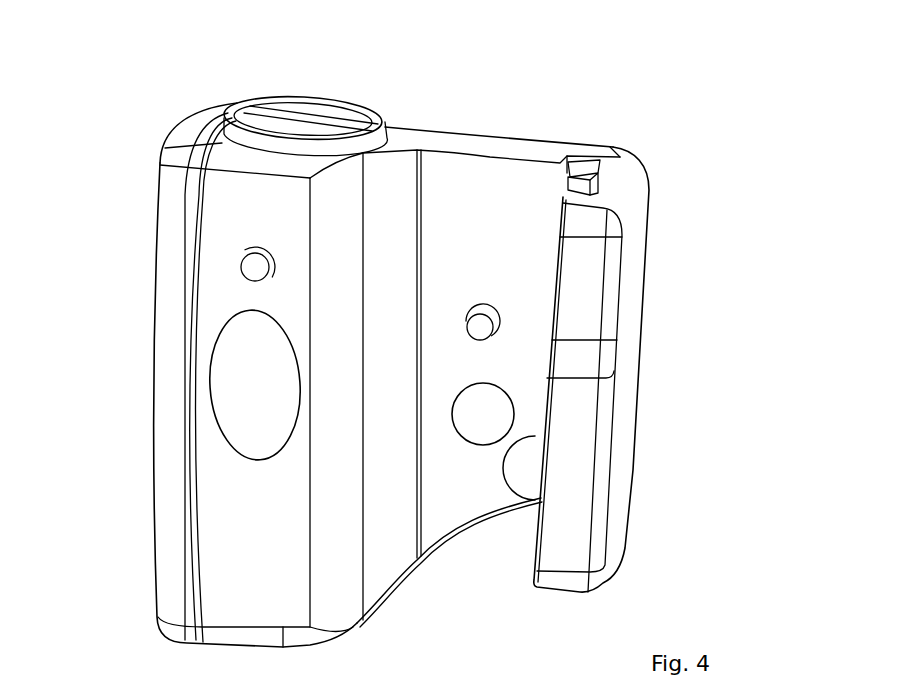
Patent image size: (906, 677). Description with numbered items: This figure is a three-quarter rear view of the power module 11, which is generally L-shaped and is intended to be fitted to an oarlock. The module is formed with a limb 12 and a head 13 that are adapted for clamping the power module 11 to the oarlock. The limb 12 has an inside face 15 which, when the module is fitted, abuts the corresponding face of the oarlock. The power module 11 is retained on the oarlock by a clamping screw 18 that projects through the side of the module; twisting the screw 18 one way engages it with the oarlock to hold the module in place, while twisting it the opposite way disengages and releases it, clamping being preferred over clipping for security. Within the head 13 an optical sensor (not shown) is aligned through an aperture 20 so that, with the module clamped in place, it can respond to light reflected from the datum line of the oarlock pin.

The power module 11 is at (148, 88).
The limb 12 is at (632, 322).
The head 13 is at (207, 240).
The inside face 15 is at (535, 500).
The clamping screw 18 is at (476, 309).
The aperture 20 is at (480, 430).